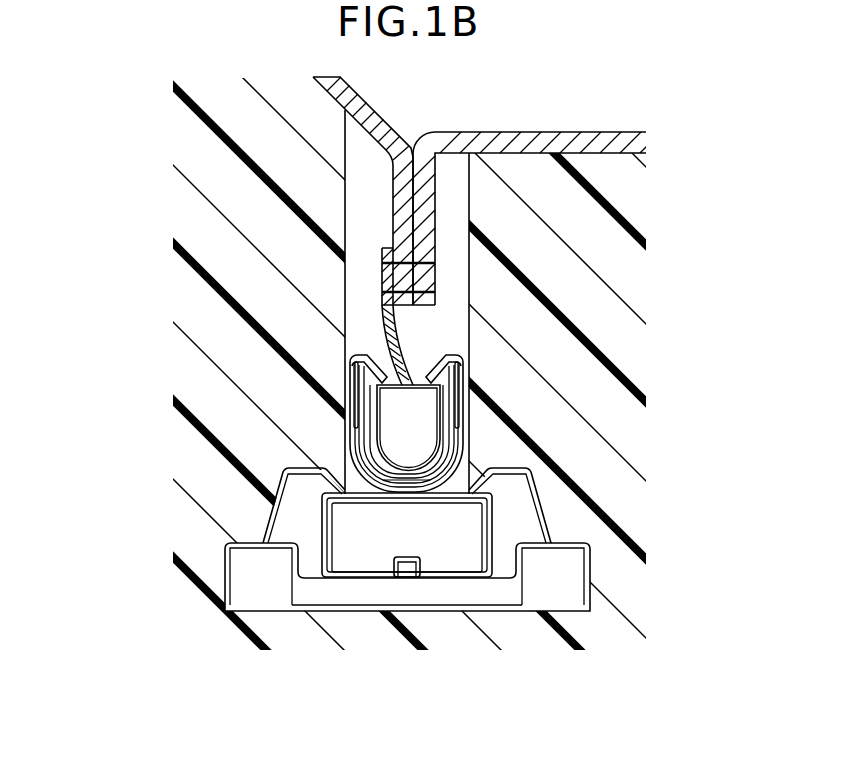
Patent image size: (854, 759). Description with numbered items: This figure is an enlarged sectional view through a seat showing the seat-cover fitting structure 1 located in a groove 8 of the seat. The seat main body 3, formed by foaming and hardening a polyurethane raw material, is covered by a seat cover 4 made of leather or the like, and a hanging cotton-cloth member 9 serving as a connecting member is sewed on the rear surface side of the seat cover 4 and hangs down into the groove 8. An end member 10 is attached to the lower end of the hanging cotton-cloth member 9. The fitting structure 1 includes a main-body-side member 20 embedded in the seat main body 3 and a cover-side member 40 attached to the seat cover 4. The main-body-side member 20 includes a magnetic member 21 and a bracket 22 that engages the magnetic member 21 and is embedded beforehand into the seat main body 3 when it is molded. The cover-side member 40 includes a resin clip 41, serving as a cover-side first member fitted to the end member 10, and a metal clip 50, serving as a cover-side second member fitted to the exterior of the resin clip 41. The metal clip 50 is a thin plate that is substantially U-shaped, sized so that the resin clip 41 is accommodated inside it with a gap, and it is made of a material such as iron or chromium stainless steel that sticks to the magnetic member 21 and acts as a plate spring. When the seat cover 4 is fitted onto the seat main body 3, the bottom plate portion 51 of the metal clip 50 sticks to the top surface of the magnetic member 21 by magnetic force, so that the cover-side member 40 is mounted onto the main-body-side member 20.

The fitting structure 1 is at (155, 172).
The seat main body 3 is at (628, 205).
The seat cover 4 is at (566, 131).
The groove 8 is at (416, 118).
The hanging cotton-cloth member 9 is at (382, 318).
The end member 10 is at (420, 420).
The main-body-side member 20 is at (407, 605).
The magnetic member 21 is at (380, 553).
The bracket 22 is at (352, 690).
The cover-side member 40 is at (269, 442).
The resin clip 41 is at (356, 348).
The metal clip 50 is at (293, 457).
The bottom plate portion 51 is at (390, 493).